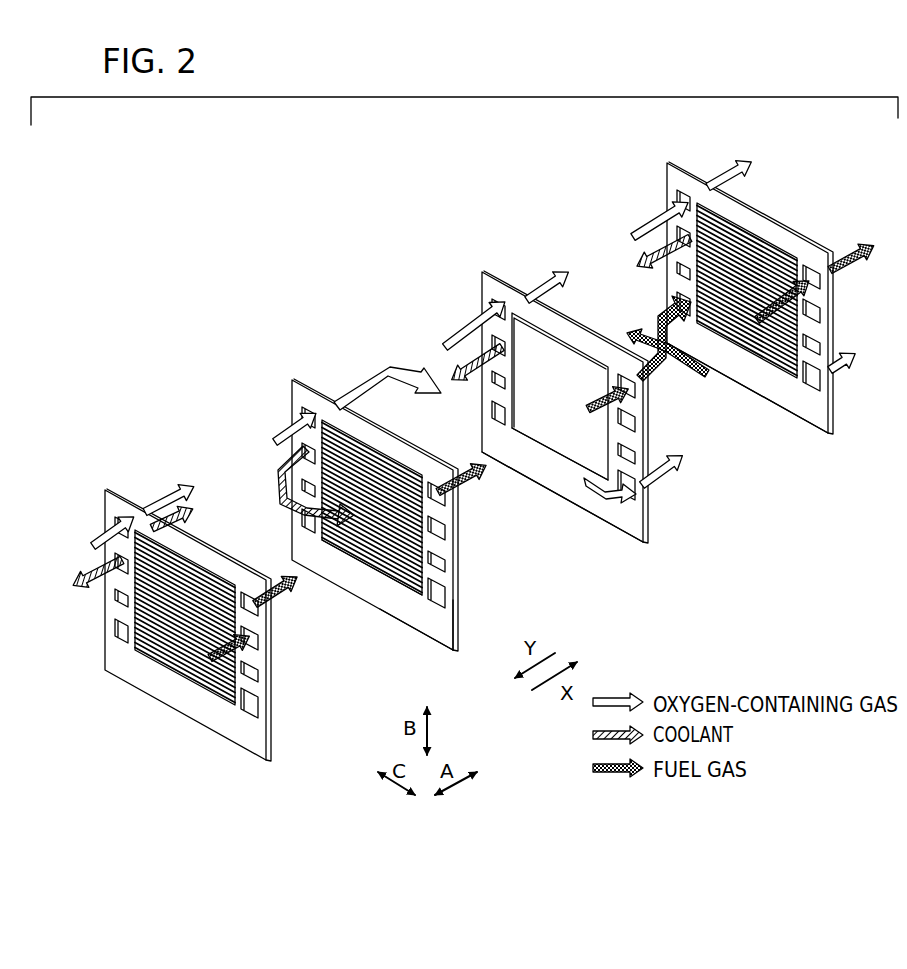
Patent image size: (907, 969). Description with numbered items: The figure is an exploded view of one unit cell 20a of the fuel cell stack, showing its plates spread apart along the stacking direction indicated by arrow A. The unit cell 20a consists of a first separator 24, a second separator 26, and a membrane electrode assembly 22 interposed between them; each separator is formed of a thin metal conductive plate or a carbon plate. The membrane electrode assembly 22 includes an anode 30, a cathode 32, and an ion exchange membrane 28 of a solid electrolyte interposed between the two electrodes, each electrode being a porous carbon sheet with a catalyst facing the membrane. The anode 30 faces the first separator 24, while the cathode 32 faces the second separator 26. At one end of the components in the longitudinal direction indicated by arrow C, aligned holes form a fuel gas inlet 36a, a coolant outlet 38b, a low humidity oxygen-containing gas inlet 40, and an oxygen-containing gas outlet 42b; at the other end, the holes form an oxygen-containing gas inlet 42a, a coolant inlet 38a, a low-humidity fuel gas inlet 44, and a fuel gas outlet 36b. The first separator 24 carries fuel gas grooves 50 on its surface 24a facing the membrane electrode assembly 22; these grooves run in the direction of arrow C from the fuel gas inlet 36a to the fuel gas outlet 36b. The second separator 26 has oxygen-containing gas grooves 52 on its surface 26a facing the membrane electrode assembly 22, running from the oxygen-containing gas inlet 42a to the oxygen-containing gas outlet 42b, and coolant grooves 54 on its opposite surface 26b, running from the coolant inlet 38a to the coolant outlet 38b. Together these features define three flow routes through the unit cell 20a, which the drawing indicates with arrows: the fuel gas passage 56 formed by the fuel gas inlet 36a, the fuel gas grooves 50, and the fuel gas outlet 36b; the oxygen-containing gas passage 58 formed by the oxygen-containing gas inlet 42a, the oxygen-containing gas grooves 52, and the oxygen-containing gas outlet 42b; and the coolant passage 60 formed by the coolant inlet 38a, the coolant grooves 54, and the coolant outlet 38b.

The unit cell 20a is at (172, 286).
The membrane electrode assembly 22 is at (479, 269).
The first separator 24 is at (102, 486).
The surface of first separator 24a is at (809, 420).
The second separator 26 is at (289, 376).
The surface of second separator 26a is at (455, 628).
The surface of second separator 26b is at (421, 636).
The ion exchange membrane 28 is at (616, 520).
The anode 30 is at (566, 352).
The cathode 32 is at (559, 452).
The fuel gas inlet 36a is at (243, 600).
The fuel gas outlet 36b is at (117, 625).
The coolant inlet 38a is at (117, 559).
The coolant outlet 38b is at (258, 640).
The low humidity oxygen-containing gas inlet 40 is at (258, 668).
The oxygen-containing gas inlet 42a is at (116, 524).
The oxygen-containing gas outlet 42b is at (250, 705).
The low-humidity fuel gas inlet 44 is at (117, 595).
The fuel gas grooves 50 is at (790, 258).
The oxygen-containing gas grooves 52 is at (376, 455).
The coolant grooves 54 is at (375, 556).
The fuel gas passage 56 is at (298, 584).
The oxygen-containing gas passage 58 is at (370, 385).
The coolant passage 60 is at (477, 374).